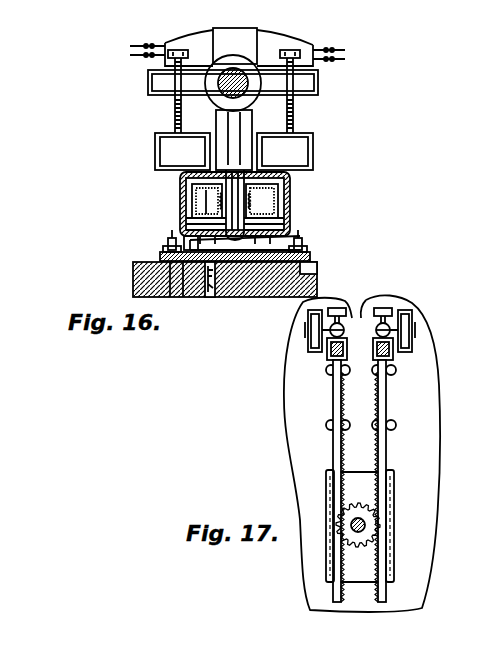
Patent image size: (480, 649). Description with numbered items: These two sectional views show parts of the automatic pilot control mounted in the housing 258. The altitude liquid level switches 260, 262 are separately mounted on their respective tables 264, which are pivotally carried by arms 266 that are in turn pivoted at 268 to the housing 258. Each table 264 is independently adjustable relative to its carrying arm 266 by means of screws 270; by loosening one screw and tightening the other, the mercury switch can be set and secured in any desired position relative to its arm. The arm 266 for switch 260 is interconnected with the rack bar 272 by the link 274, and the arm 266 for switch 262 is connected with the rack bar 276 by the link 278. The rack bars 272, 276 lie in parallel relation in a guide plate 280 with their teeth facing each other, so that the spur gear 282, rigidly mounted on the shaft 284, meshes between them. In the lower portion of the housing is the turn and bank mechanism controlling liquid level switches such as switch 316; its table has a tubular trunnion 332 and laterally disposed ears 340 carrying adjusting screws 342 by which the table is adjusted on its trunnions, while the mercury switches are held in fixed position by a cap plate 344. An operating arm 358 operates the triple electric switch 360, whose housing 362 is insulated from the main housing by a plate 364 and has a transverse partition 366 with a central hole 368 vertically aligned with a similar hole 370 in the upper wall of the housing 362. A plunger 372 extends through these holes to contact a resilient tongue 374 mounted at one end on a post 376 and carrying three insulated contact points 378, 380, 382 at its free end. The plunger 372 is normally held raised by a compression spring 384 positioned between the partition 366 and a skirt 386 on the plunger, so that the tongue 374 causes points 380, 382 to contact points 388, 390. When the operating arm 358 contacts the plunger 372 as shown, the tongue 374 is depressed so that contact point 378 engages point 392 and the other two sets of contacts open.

In FIG. 16, the cap plate 344 is at (240, 32).
In FIG. 16, the liquid level switch 316 is at (285, 40).
In FIG. 16, the ears 340 is at (318, 76).
In FIG. 16, the adjusting screws 342 is at (175, 113).
In FIG. 16, the operating arm 358 is at (240, 127).
In FIG. 16, the tubular trunnion 332 is at (175, 126).
In FIG. 16, the hole 370 is at (182, 151).
In FIG. 16, the plunger 372 is at (285, 151).
In FIG. 16, the skirt 386 is at (246, 178).
In FIG. 16, the triple electric switch 360 is at (180, 186).
In FIG. 16, the central hole 368 is at (252, 204).
In FIG. 16, the compression spring 384 is at (192, 200).
In FIG. 16, the transverse partition 366 is at (278, 200).
In FIG. 16, the contact point 390 is at (186, 210).
In FIG. 16, the housing 362 is at (290, 218).
In FIG. 16, the contact point 388 is at (166, 235).
In FIG. 16, the post 376 is at (300, 240).
In FIG. 16, the contact point 380 is at (184, 246).
In FIG. 16, the plate 364 is at (310, 256).
In FIG. 16, the contact point 378 is at (133, 278).
In FIG. 16, the resilient tongue 374 is at (270, 297).
In FIG. 16, the contact point 382 is at (207, 297).
In FIG. 16, the contact point 392 is at (198, 297).
In FIG. 17, the housing 258 is at (439, 408).
In FIG. 17, the altitude liquid level switch 260 is at (345, 302).
In FIG. 17, the altitude liquid level switch 262 is at (376, 306).
In FIG. 17, the screws 270 is at (394, 306).
In FIG. 17, the pivot 268 is at (308, 330).
In FIG. 17, the table 264 is at (330, 342).
In FIG. 17, the arm 266 is at (332, 363).
In FIG. 17, the link 274 is at (333, 402).
In FIG. 17, the link 278 is at (386, 390).
In FIG. 17, the rack bar 272 is at (333, 450).
In FIG. 17, the rack bar 276 is at (386, 451).
In FIG. 17, the guide plate 280 is at (370, 489).
In FIG. 17, the spur gear 282 is at (376, 516).
In FIG. 17, the shaft 284 is at (366, 529).